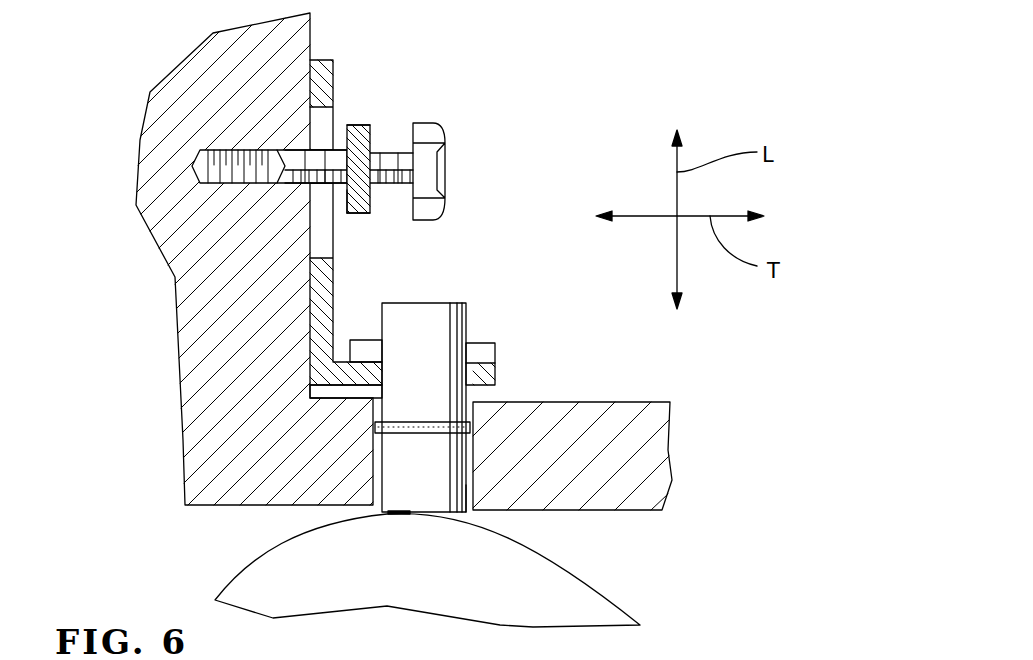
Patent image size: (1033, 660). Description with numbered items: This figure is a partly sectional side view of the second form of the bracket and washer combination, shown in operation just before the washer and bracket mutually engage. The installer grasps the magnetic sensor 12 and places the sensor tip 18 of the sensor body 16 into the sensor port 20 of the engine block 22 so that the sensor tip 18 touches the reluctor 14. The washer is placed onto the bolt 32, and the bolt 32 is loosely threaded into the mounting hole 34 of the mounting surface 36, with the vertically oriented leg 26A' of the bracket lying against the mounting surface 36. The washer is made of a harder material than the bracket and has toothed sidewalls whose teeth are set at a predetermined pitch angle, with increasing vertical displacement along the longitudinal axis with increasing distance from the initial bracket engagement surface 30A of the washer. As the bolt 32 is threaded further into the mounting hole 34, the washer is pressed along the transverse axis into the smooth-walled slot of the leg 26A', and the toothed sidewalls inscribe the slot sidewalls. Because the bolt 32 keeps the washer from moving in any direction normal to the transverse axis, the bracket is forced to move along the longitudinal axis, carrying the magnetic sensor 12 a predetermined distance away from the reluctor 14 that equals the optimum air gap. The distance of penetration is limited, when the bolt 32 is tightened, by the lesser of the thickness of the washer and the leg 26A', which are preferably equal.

The magnetic sensor 12 is at (485, 309).
The reluctor 14 is at (632, 601).
The sensor body 16 is at (465, 492).
The sensor tip 18 is at (407, 514).
The sensor port 20 is at (467, 450).
The engine block 22 is at (653, 402).
The leg 26A' is at (414, 331).
The initial bracket engagement surface 30A is at (347, 195).
The bolt 32 is at (433, 132).
The mounting hole 34 is at (194, 164).
The mounting surface 36 is at (310, 32).